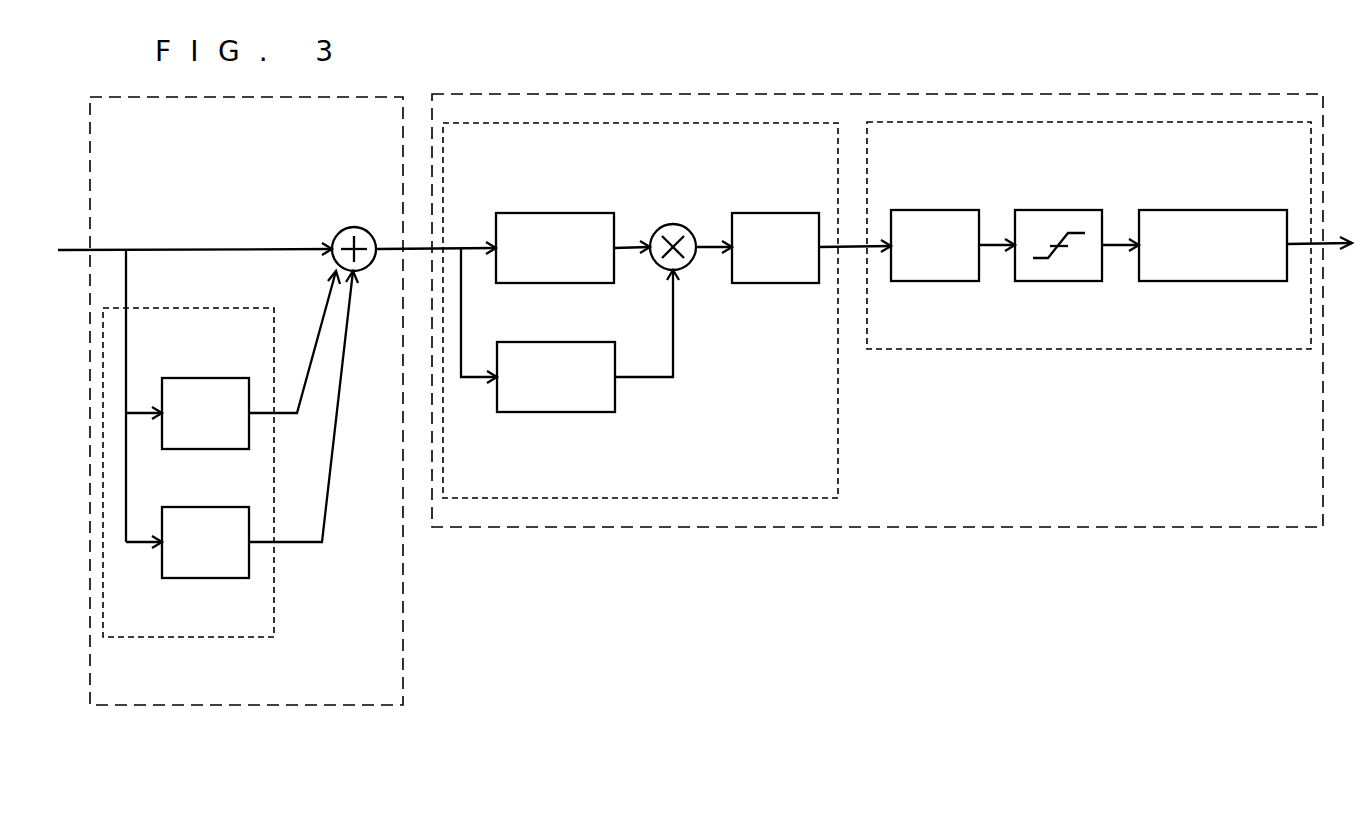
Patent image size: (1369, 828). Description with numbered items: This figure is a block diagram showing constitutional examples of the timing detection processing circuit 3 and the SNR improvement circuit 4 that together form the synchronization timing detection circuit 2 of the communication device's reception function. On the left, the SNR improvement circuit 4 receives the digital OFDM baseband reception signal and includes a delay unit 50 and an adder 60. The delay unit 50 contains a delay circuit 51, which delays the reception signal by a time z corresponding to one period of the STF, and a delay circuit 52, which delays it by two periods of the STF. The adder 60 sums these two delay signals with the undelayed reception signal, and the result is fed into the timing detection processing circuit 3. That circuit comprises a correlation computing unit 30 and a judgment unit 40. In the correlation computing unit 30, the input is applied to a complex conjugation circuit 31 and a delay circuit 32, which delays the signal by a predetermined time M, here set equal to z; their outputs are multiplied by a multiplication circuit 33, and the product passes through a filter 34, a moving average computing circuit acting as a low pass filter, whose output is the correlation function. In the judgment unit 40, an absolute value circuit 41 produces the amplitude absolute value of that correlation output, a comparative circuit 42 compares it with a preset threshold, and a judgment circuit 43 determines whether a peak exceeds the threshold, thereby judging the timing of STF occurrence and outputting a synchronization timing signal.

The synchronization timing detection circuit 2 is at (1121, 687).
The timing detection processing circuit 3 is at (1198, 528).
The SNR improvement circuit 4 is at (404, 671).
The correlation computing unit 30 is at (839, 467).
The complex conjugation circuit 31 is at (556, 213).
The delay circuit 32 is at (553, 413).
The multiplication circuit 33 is at (675, 224).
The filter 34 is at (779, 213).
The judgment unit 40 is at (1071, 350).
The absolute value circuit 41 is at (936, 210).
The comparative circuit 42 is at (1061, 210).
The judgment circuit 43 is at (1214, 210).
The delay unit 50 is at (187, 308).
The delay circuit 51 is at (185, 449).
The delay circuit 52 is at (185, 578).
The adder 60 is at (356, 227).